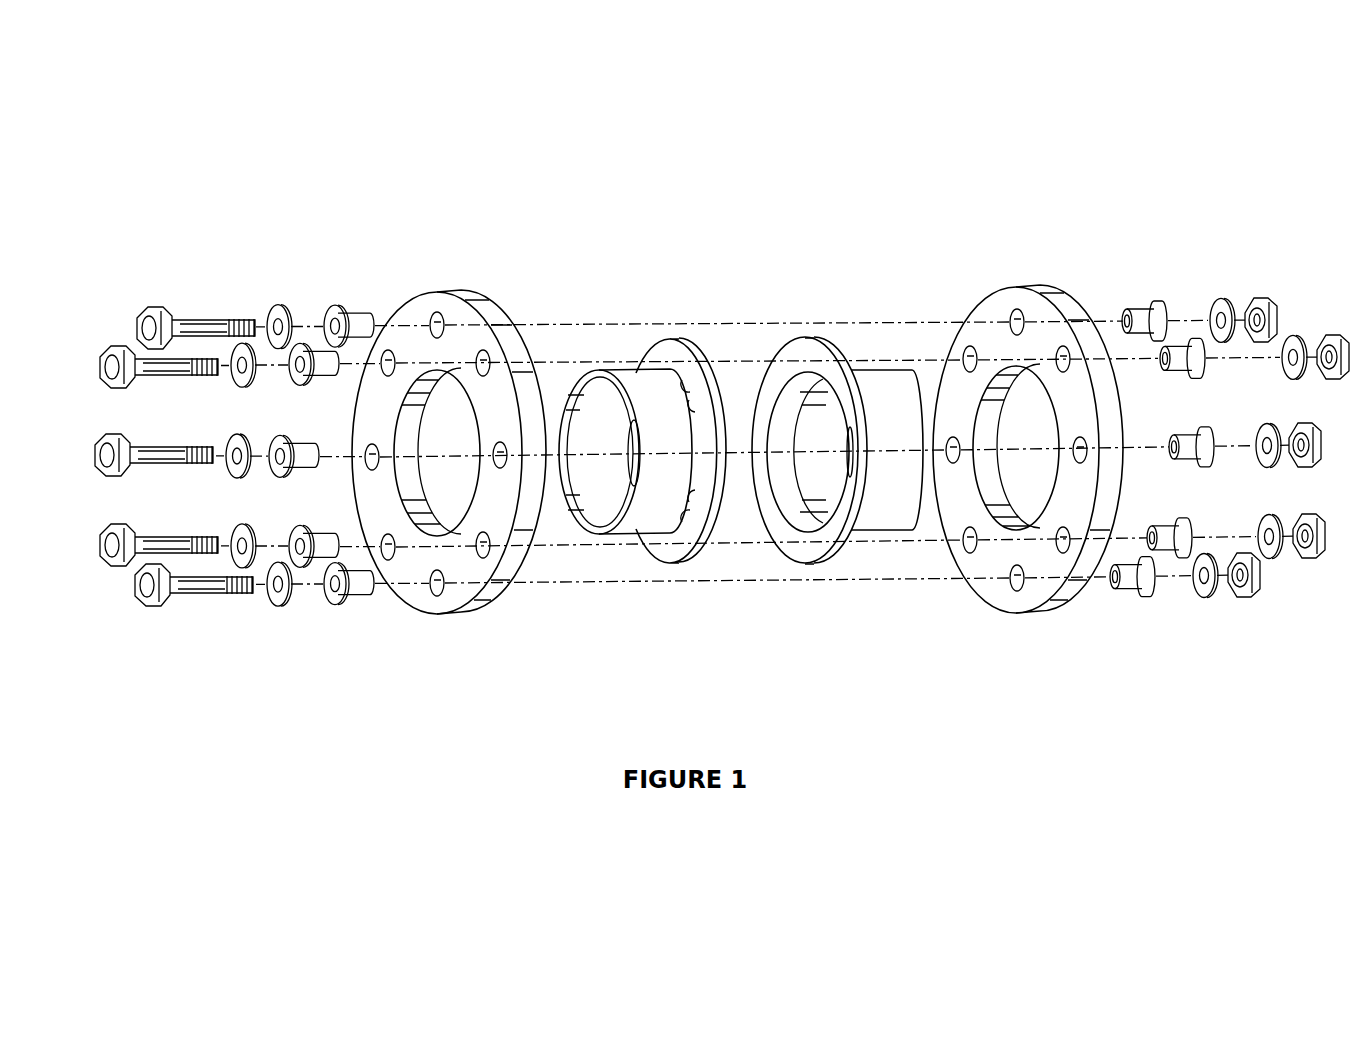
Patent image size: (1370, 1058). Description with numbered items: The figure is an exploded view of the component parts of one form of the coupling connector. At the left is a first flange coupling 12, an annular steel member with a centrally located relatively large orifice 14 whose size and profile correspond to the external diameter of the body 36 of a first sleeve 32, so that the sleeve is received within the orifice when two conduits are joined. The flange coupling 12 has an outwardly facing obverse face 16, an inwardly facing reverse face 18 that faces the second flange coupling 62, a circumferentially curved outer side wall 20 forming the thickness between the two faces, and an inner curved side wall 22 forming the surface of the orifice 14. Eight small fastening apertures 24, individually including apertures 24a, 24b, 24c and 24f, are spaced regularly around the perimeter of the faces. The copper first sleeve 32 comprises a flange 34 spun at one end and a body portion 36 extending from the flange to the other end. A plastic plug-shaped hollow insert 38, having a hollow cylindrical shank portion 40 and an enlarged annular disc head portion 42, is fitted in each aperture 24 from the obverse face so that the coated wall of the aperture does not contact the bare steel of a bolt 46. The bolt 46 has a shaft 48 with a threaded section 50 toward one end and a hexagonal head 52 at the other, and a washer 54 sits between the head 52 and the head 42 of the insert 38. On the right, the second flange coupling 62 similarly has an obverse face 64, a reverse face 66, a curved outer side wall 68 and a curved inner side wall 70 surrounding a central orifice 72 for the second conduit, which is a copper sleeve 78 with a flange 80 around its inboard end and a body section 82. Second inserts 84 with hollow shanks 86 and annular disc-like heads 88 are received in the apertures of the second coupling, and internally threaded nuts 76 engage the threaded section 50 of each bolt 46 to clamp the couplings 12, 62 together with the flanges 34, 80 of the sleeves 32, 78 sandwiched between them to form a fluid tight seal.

The first flange coupling 12 is at (521, 420).
The orifice 14 is at (521, 420).
The obverse face 16 is at (500, 504).
The reverse face 18 is at (520, 314).
The outer side wall 20 is at (442, 293).
The inner curved side wall 22 is at (405, 433).
The fastening apertures 24 is at (1013, 590).
The fastening aperture 24a is at (492, 359).
The fastening aperture 24b is at (446, 318).
The fastening aperture 24c is at (385, 350).
The fastening aperture 24f is at (438, 594).
The first sleeve 32 is at (653, 456).
The flange 34 is at (684, 358).
The body portion 36 is at (630, 522).
The insert 38 is at (323, 429).
The shank portion 40 is at (349, 620).
The head portion 42 is at (294, 607).
The bolt 46 is at (185, 281).
The shaft 48 is at (203, 294).
The threaded section 50 is at (256, 282).
The head 52 is at (129, 303).
The washer 54 is at (283, 306).
The second flange coupling 62 is at (1052, 454).
The obverse face 64 is at (1128, 483).
The reverse face 66 is at (1050, 572).
The outer side wall 68 is at (1065, 597).
The inner side wall 70 is at (988, 494).
The orifice 72 is at (1018, 409).
The nut 76 is at (1252, 590).
The second sleeve 78 is at (837, 522).
The flange 80 is at (800, 547).
The body section 82 is at (877, 535).
The second insert 84 is at (1150, 592).
The hollow shank 86 is at (1119, 283).
The head 88 is at (1183, 280).